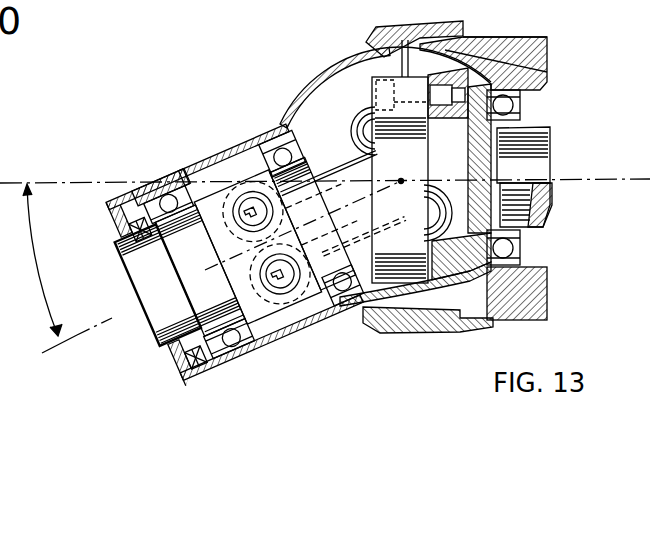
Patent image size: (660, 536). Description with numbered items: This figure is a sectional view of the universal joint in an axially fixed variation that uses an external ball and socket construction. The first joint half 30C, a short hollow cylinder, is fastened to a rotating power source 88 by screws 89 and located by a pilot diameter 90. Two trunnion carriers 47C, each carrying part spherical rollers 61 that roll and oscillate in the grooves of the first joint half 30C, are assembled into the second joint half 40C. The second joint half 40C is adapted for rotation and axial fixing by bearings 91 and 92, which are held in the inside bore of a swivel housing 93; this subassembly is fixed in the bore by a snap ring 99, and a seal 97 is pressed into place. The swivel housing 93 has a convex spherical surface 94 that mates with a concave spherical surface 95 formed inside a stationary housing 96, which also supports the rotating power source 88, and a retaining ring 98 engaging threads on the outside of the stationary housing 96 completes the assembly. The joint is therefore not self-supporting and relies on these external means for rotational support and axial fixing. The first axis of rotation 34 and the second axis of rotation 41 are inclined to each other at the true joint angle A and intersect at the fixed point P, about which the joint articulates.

The first axis of rotation 34 is at (13, 182).
The second axis of rotation 41 is at (221, 279).
The true joint angle A is at (36, 260).
The fixed point P is at (408, 165).
The second joint half 40C is at (285, 312).
The first joint half 30C is at (396, 283).
The trunnion carrier 47C is at (342, 206).
The part spherical roller 61 is at (338, 128).
The rotating power source 88 is at (548, 132).
The screws 89 is at (550, 64).
The pilot diameter 90 is at (542, 37).
The bearing 91 is at (181, 170).
The bearing 92 is at (262, 140).
The swivel housing 93 is at (157, 178).
The convex spherical surface 94 is at (312, 87).
The concave spherical surface 95 is at (478, 36).
The stationary housing 96 is at (548, 270).
The seal 97 is at (182, 362).
The retaining ring 98 is at (434, 30).
The snap ring 99 is at (127, 182).